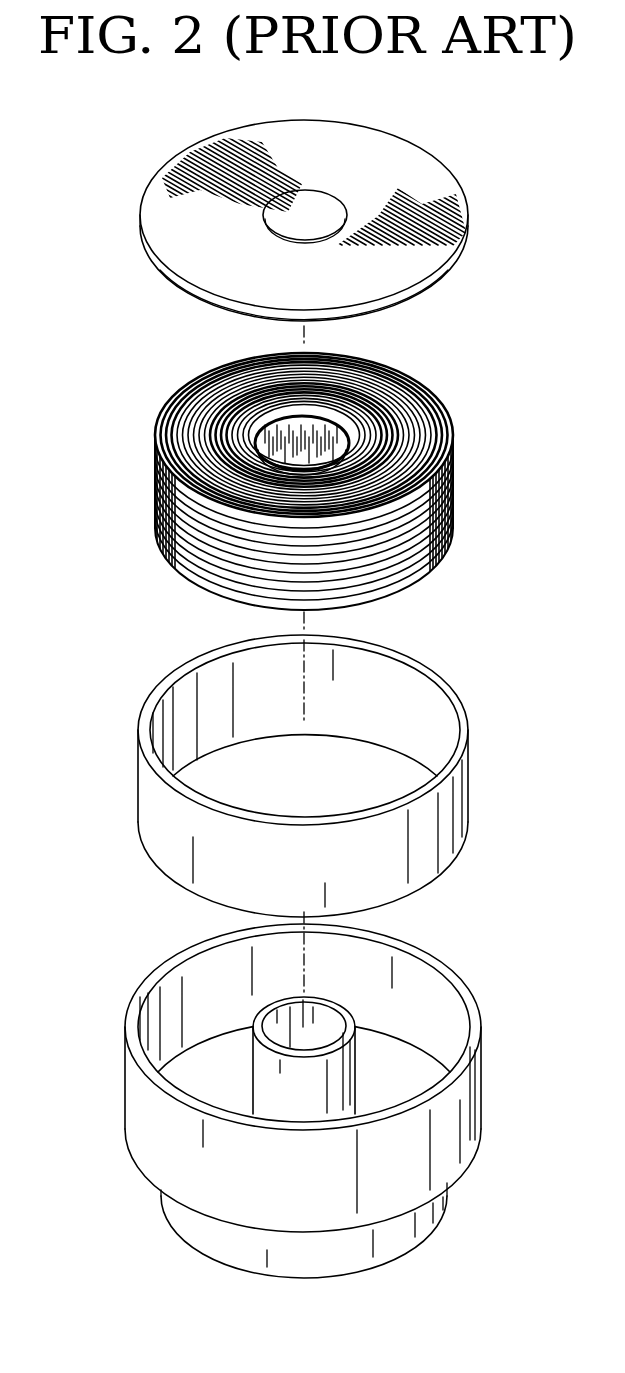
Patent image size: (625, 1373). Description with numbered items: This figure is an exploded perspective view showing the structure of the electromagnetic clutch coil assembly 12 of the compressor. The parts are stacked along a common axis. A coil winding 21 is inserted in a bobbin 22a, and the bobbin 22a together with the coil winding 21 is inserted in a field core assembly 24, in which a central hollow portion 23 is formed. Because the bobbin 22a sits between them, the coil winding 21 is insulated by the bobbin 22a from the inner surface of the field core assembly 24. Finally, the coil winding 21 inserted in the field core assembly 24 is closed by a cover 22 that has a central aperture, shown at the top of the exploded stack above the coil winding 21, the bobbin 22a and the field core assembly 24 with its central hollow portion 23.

The electromagnetic clutch coil assembly 12 is at (551, 142).
The coil winding 21 is at (455, 493).
The cover 22 is at (442, 168).
The bobbin 22a is at (463, 782).
The central hollow portion 23 is at (276, 1014).
The field core assembly 24 is at (213, 1257).